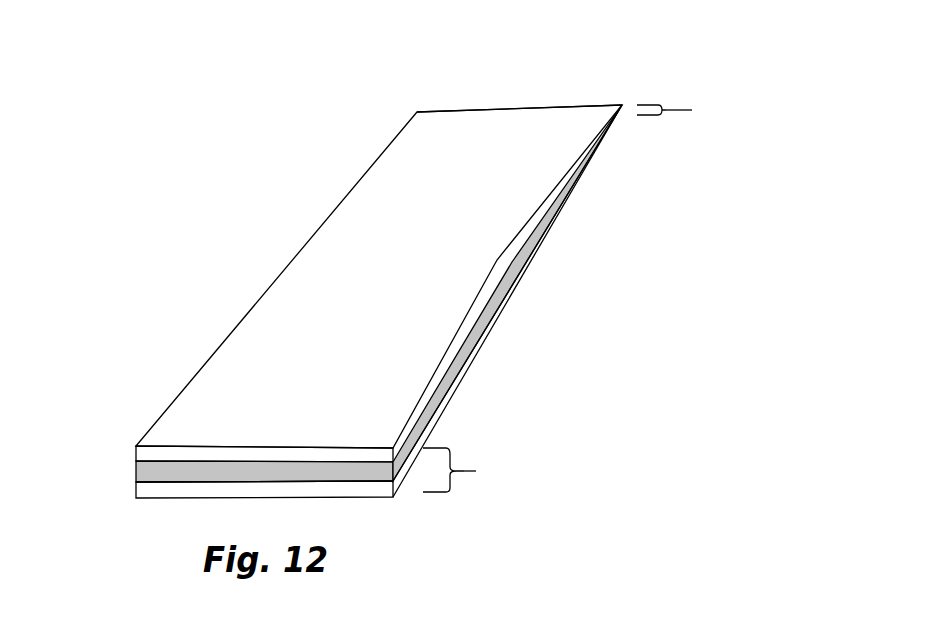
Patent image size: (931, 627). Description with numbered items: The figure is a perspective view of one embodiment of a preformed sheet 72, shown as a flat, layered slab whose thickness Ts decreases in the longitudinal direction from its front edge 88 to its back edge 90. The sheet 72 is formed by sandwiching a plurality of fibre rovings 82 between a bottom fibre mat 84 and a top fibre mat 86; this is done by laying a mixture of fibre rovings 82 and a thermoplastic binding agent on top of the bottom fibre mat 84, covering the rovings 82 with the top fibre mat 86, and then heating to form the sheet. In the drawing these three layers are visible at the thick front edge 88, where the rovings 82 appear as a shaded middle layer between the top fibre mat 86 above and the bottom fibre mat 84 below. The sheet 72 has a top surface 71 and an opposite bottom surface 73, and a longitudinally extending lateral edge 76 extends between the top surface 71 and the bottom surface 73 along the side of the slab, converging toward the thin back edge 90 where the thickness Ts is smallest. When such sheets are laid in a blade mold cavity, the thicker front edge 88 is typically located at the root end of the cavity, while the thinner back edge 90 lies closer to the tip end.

The preformed sheet 72 is at (300, 136).
The top surface 71 is at (333, 362).
The back edge 90 is at (527, 106).
The top fibre mat 86 is at (147, 453).
The fibre rovings 82 is at (147, 469).
The bottom fibre mat 84 is at (152, 490).
The front edge 88 is at (348, 482).
The lateral edge 76 is at (477, 337).
The bottom surface 73 is at (442, 415).